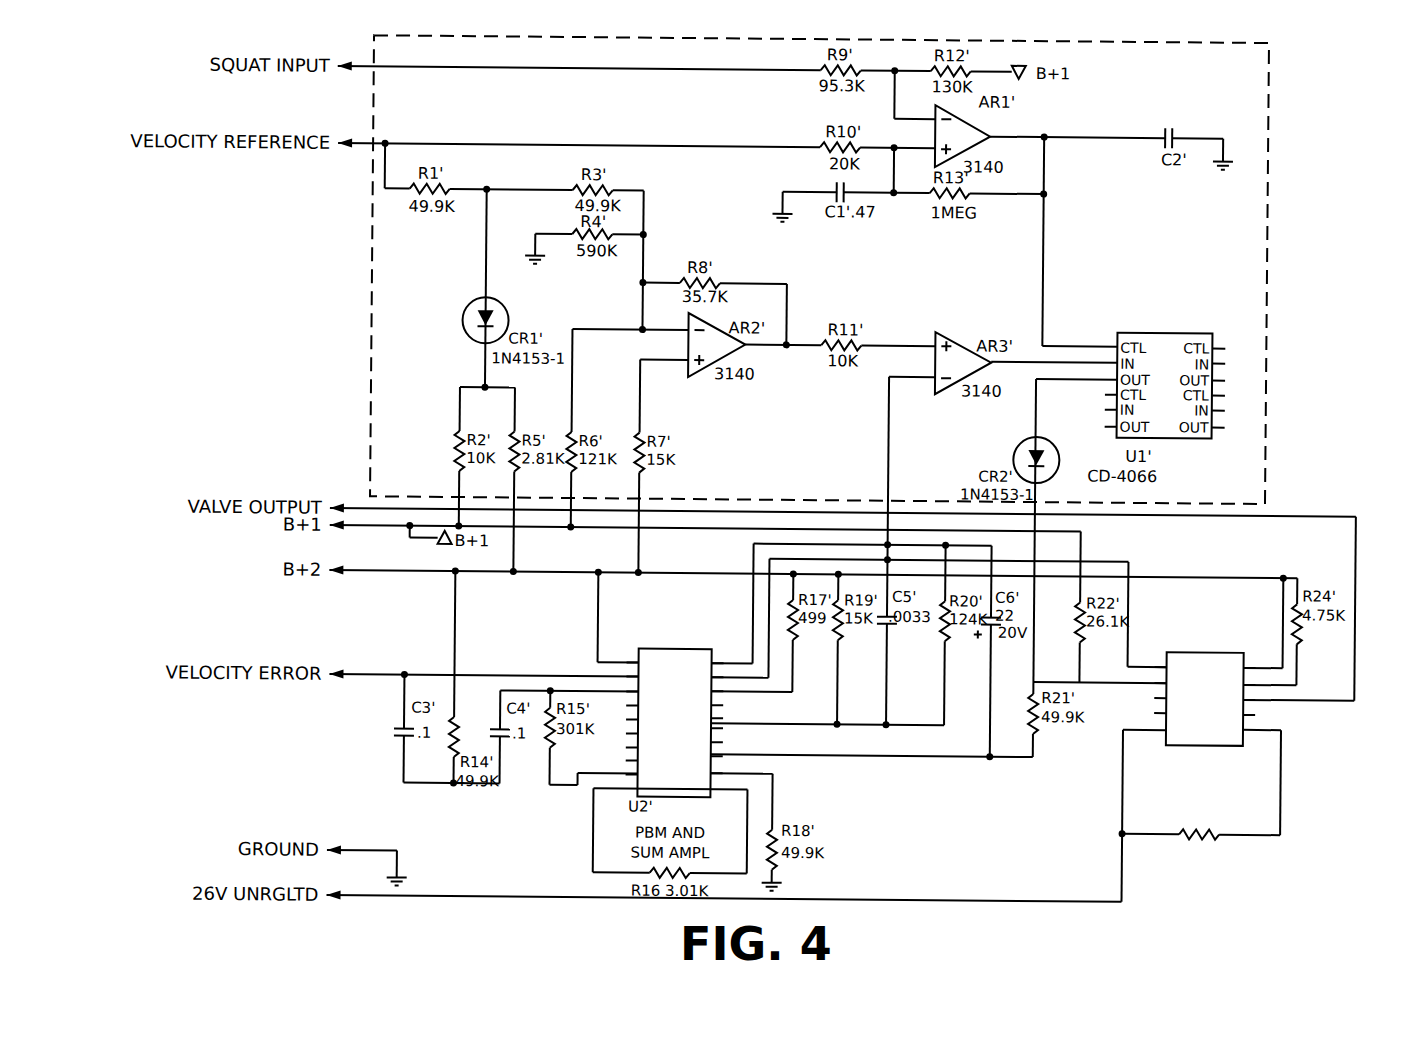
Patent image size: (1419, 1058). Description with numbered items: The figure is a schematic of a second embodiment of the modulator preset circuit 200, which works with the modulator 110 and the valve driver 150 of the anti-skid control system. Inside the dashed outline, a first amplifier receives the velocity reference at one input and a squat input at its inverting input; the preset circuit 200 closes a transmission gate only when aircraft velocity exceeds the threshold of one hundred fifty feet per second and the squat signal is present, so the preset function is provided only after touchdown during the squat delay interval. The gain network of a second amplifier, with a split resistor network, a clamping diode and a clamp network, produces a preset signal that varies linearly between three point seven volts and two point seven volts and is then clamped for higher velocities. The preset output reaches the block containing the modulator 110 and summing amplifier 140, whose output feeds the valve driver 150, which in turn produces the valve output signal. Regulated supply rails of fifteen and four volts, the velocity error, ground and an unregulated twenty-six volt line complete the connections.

The modulator preset circuit 200 is at (1265, 100).
The modulator 110 is at (675, 696).
The summing amplifier 140 is at (670, 650).
The valve driver 150 is at (1205, 649).